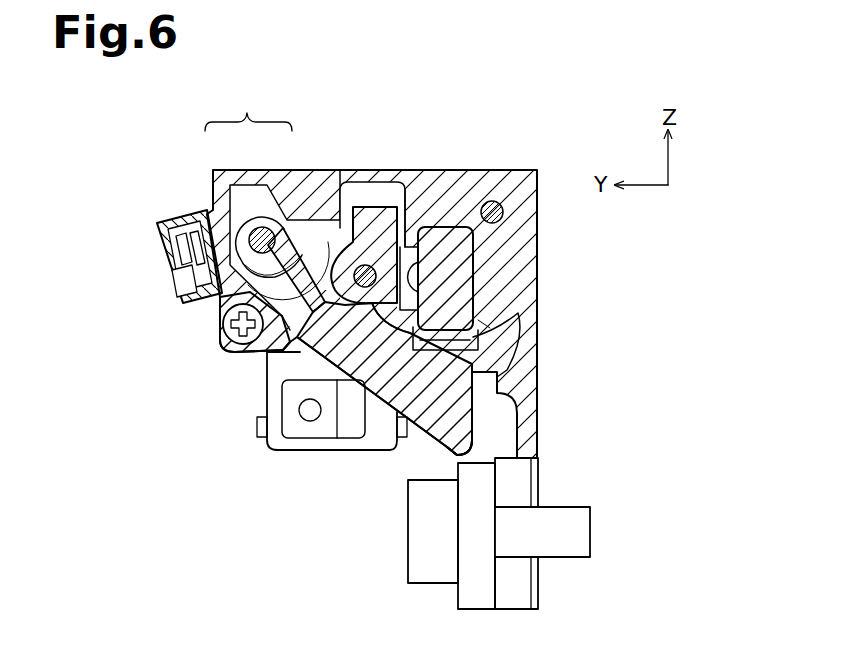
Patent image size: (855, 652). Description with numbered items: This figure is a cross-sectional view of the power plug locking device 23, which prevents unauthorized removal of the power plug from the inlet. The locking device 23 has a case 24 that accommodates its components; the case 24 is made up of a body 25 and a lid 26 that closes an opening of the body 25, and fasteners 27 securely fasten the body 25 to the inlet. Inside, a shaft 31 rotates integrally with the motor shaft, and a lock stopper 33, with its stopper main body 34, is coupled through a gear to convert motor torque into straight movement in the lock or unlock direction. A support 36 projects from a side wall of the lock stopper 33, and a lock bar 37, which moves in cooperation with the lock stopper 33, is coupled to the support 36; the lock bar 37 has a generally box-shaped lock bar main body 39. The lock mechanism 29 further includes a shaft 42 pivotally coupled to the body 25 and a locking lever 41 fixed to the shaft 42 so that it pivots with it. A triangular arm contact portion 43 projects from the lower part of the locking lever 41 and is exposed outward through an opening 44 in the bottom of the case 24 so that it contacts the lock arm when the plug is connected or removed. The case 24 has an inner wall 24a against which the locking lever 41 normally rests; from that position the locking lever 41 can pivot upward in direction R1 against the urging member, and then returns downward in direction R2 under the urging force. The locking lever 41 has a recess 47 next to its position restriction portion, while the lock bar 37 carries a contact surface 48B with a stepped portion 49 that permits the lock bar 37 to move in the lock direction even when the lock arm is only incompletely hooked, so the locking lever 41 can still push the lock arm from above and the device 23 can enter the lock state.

The power plug locking device 23 is at (178, 152).
The case 24 is at (248, 110).
The body 25 is at (260, 168).
The lid 26 is at (221, 168).
The fasteners 27 is at (420, 553).
The lock mechanism 29 is at (393, 467).
The shaft 31 is at (366, 264).
The lock stopper 33 is at (381, 366).
The stopper main body 34 is at (343, 295).
The support 36 is at (405, 240).
The lock bar 37 is at (441, 228).
The lock bar main body 39 is at (465, 260).
The locking lever 41 is at (420, 423).
The shaft 42 is at (268, 228).
The arm contact portion 43 is at (400, 420).
The opening 44 is at (287, 367).
The recess 47 is at (445, 350).
The contact surface 48B is at (478, 317).
The stepped portion 49 is at (508, 313).
The inner wall 24a is at (263, 352).
The upward direction R1 is at (258, 292).
The downward direction R2 is at (310, 267).